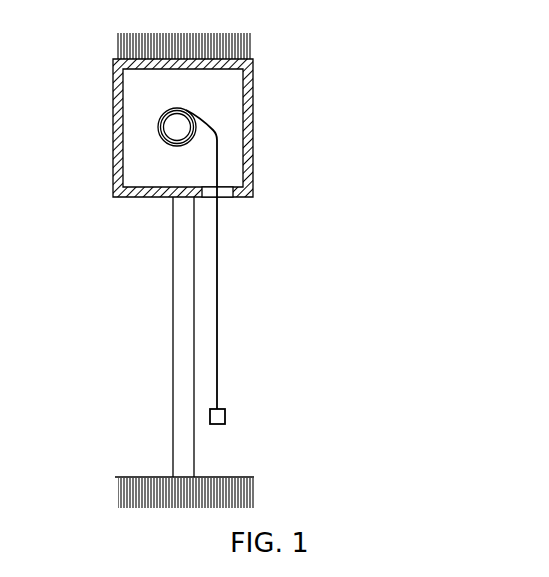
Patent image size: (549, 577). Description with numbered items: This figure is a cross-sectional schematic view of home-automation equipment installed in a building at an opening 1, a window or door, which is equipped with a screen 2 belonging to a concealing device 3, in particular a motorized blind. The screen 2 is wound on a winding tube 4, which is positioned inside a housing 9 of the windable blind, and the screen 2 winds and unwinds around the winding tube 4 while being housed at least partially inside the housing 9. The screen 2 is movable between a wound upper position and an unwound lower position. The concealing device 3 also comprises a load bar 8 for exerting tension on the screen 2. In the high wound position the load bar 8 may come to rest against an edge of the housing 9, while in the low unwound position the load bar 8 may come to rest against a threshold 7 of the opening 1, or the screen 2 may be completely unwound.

The opening 1 is at (165, 344).
The screen 2 is at (217, 255).
The concealing device 3 is at (252, 307).
The winding tube 4 is at (160, 138).
The threshold 7 is at (150, 475).
The load bar 8 is at (225, 417).
The housing 9 is at (118, 90).